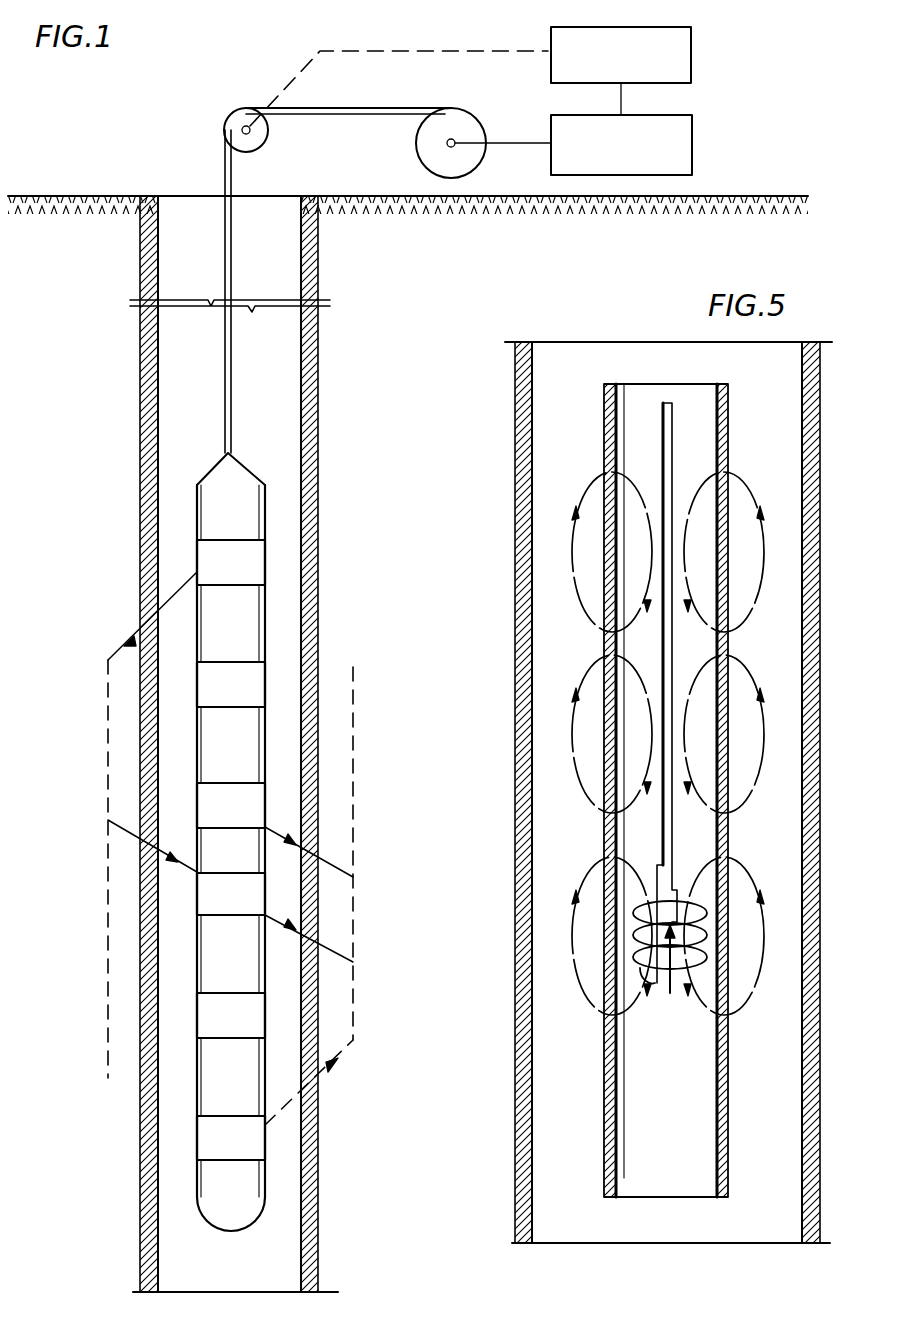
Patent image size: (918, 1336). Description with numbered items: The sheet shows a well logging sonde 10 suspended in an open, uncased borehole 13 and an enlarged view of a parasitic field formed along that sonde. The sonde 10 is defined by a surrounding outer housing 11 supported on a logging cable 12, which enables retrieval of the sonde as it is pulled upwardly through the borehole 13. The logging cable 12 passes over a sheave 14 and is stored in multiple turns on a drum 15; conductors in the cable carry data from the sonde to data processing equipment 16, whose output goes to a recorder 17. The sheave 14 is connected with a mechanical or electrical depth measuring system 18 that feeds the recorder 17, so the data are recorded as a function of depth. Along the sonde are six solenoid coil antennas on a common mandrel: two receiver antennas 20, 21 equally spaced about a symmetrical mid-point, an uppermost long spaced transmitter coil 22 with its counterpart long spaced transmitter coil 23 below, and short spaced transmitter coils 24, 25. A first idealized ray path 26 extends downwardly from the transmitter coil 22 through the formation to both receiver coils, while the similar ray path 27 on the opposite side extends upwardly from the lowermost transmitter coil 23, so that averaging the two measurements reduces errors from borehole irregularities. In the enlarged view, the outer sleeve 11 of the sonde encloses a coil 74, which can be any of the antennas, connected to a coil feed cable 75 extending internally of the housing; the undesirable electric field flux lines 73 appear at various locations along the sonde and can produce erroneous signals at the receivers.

In FIG. 1, the sonde 10 is at (272, 216).
In FIG. 1, the outer housing 11 is at (197, 512).
In FIG. 5, the outer housing 11 is at (604, 638).
In FIG. 1, the logging cable 12 is at (224, 176).
In FIG. 1, the borehole 13 is at (305, 346).
In FIG. 1, the sheave 14 is at (242, 110).
In FIG. 1, the drum 15 is at (418, 157).
In FIG. 1, the data processing equipment 16 is at (693, 142).
In FIG. 1, the recorder 17 is at (692, 50).
In FIG. 1, the depth measuring system 18 is at (415, 51).
In FIG. 1, the receiver antenna 20 is at (265, 802).
In FIG. 1, the receiver antenna 21 is at (197, 900).
In FIG. 1, the long spaced transmitter coil 22 is at (265, 562).
In FIG. 1, the long spaced transmitter coil 23 is at (197, 1144).
In FIG. 1, the short spaced transmitter coil 24 is at (265, 680).
In FIG. 1, the short spaced transmitter coil 25 is at (197, 1022).
In FIG. 1, the ray path 26 is at (108, 762).
In FIG. 1, the ray path 27 is at (353, 918).
In FIG. 5, the field flux lines 73 is at (764, 548).
In FIG. 5, the coils 74 is at (655, 983).
In FIG. 5, the coil feed cable 75 is at (673, 640).